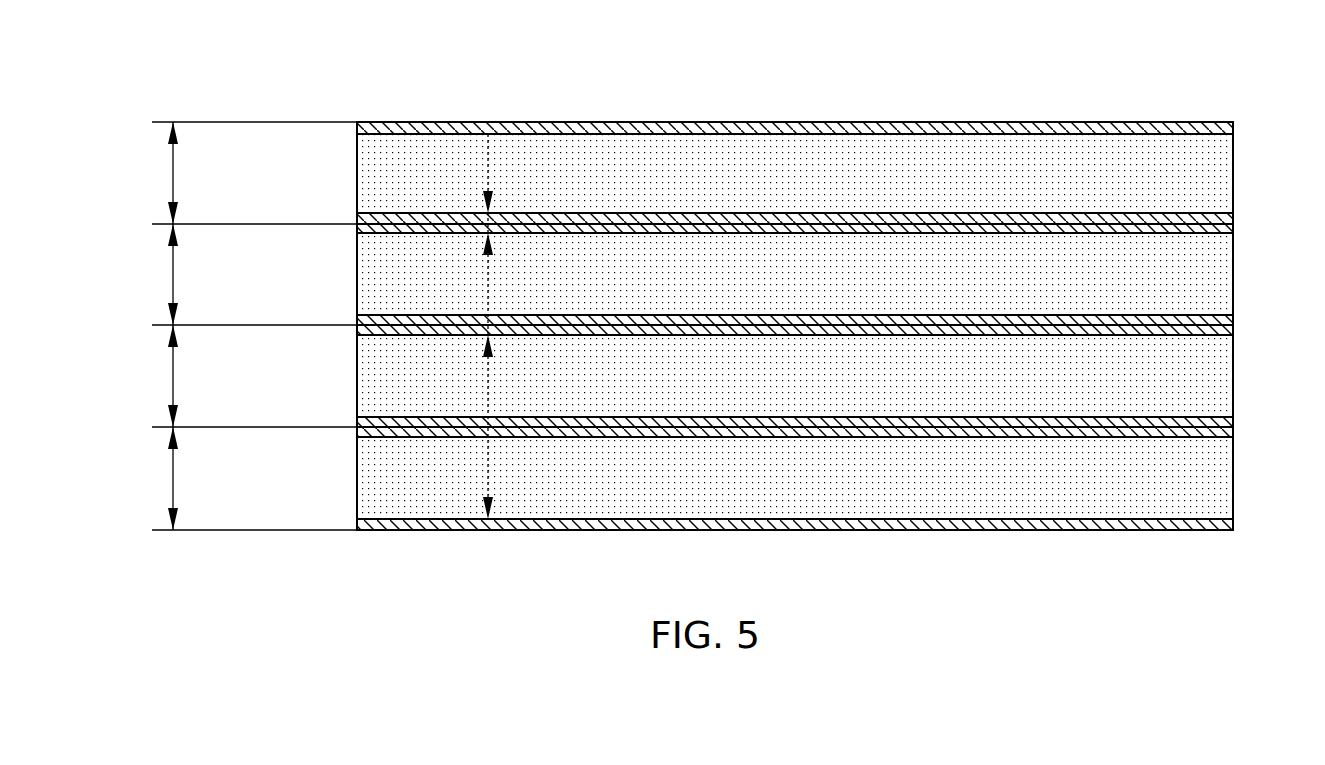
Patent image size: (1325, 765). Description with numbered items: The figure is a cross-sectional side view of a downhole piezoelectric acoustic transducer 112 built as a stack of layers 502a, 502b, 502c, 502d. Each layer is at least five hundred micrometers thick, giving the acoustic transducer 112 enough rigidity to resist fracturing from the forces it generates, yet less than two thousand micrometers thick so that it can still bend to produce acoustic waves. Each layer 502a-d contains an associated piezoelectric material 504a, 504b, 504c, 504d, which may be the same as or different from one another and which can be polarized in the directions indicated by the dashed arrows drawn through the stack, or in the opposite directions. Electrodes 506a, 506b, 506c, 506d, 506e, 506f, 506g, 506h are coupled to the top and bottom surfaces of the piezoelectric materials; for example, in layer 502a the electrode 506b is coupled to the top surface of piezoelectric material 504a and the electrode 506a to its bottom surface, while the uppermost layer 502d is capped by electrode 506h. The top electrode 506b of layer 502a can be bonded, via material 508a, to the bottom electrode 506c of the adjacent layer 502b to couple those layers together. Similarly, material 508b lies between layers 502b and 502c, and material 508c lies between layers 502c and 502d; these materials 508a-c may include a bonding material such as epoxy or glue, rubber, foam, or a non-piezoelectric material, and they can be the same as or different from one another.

The acoustic transducer 112 is at (886, 80).
The layer 502a is at (172, 467).
The layer 502b is at (172, 373).
The layer 502c is at (172, 277).
The layer 502d is at (172, 170).
The piezoelectric material 504a is at (366, 476).
The piezoelectric material 504b is at (366, 374).
The piezoelectric material 504c is at (366, 274).
The piezoelectric material 504d is at (366, 162).
The electrode 506a is at (1233, 525).
The electrode 506b is at (1233, 432).
The electrode 506c is at (1233, 422).
The electrode 506d is at (1233, 330).
The electrode 506e is at (1233, 320).
The electrode 506f is at (1233, 229).
The electrode 506g is at (1226, 218).
The electrode 506h is at (1233, 126).
The material 508a is at (1153, 437).
The material 508b is at (933, 335).
The material 508c is at (782, 213).